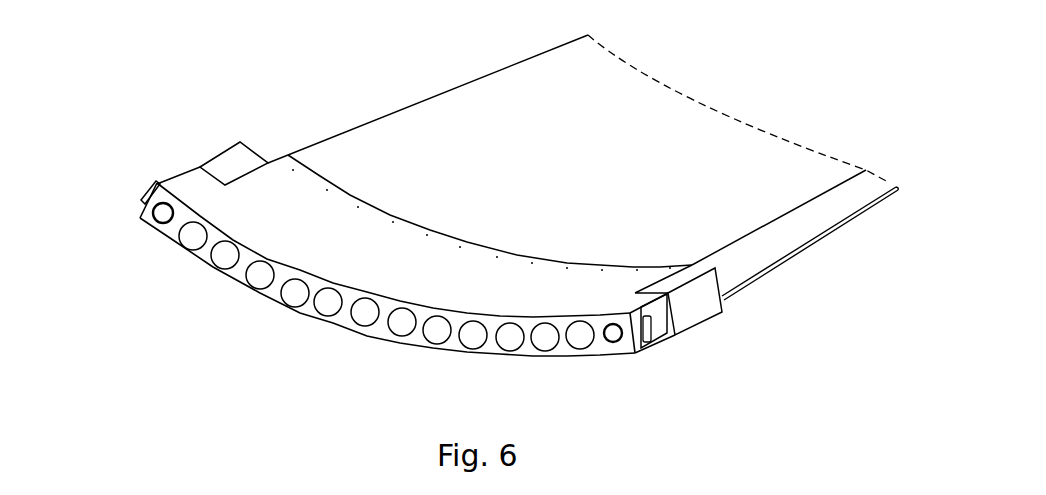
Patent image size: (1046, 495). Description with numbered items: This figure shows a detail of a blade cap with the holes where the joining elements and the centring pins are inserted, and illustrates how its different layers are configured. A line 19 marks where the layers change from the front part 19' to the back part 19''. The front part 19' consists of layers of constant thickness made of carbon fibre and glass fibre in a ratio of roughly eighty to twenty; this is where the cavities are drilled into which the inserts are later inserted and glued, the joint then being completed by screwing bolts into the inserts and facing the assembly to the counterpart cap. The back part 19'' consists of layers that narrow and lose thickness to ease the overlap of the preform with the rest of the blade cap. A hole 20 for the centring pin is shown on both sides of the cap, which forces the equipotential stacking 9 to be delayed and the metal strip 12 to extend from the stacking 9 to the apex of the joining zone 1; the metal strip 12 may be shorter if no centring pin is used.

The joining zone 1 is at (357, 283).
The equipotential stacking 9 is at (237, 162).
The metal strip 12 is at (143, 200).
The line 19 is at (490, 160).
The front part 19' is at (222, 131).
The back part 19'' is at (583, 152).
The hole for the centring pin 20 is at (163, 218).